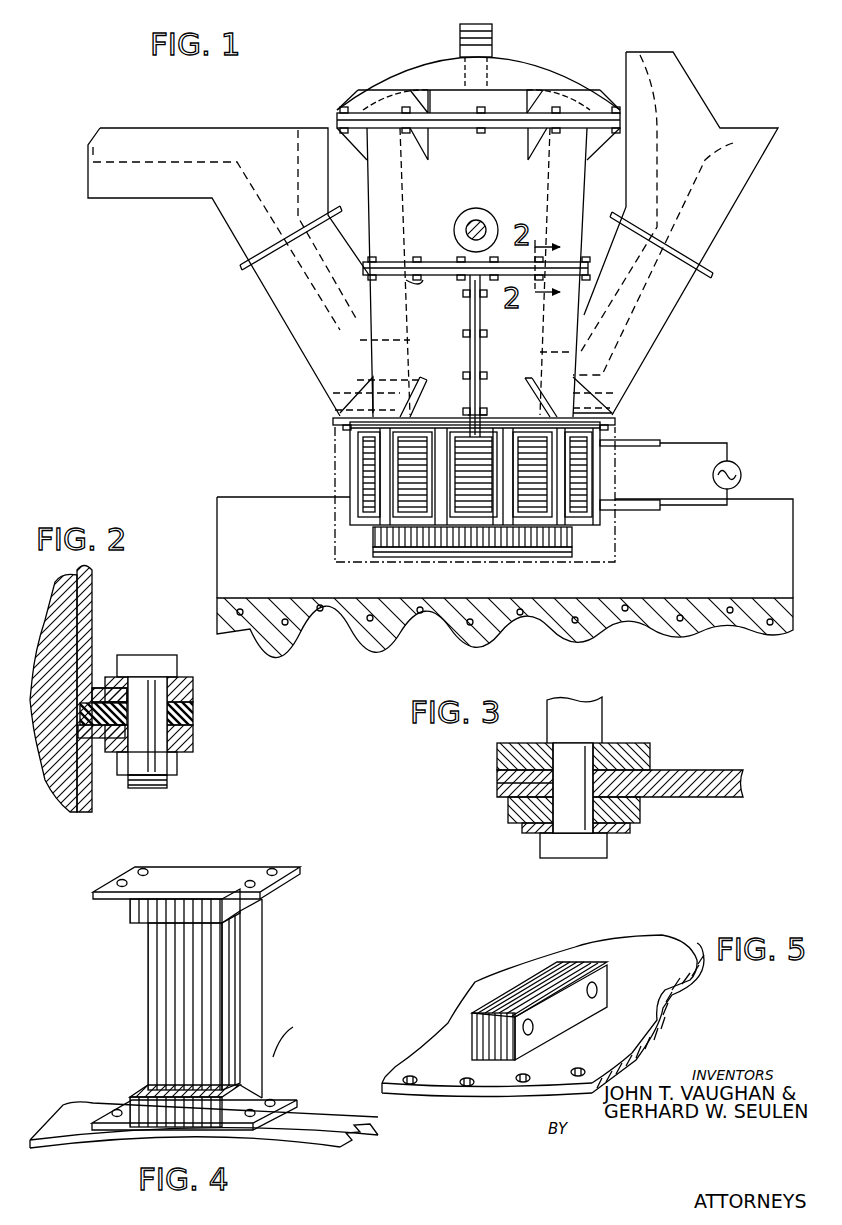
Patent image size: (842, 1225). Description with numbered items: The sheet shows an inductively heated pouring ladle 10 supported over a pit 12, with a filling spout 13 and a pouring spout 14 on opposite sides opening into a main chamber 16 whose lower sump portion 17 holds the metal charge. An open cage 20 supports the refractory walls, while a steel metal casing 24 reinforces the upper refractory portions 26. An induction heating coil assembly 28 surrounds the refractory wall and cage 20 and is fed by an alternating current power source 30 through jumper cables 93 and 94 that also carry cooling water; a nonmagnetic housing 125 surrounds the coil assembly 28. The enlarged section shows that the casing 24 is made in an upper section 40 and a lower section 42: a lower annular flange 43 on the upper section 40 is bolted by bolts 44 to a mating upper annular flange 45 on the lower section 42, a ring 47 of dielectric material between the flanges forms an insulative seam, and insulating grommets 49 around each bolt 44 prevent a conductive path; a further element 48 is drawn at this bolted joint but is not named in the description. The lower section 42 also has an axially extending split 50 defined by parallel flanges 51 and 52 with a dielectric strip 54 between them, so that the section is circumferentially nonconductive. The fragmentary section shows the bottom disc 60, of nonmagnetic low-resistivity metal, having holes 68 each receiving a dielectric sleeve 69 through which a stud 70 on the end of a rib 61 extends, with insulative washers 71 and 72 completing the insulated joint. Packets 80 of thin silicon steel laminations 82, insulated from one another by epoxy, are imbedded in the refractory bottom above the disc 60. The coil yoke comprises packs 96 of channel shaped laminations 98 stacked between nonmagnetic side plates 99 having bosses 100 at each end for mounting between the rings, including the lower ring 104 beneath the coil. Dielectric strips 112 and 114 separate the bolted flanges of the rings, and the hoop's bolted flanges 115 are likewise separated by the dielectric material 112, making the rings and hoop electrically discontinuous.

In FIG. 1, the pouring ladle 10 is at (573, 40).
In FIG. 1, the pit 12 is at (241, 515).
In FIG. 1, the filling spout 13 is at (752, 193).
In FIG. 1, the pouring spout 14 is at (162, 203).
In FIG. 1, the main chamber 16 is at (417, 307).
In FIG. 1, the lower sump portion 17 is at (362, 395).
In FIG. 1, the cage 20 is at (578, 554).
In FIG. 1, the metal casing 24 is at (592, 193).
In FIG. 1, the upper refractory portions 26 is at (587, 173).
In FIG. 2, the upper refractory portions 26 is at (72, 612).
In FIG. 1, the induction heating coil assembly 28 is at (604, 528).
In FIG. 1, the alternating current power source 30 is at (743, 467).
In FIG. 2, the upper section 40 is at (93, 581).
In FIG. 1, the lower section 42 is at (563, 333).
In FIG. 2, the lower section 42 is at (93, 790).
In FIG. 1, the lower annular flange 43 is at (446, 240).
In FIG. 2, the lower annular flange 43 is at (96, 688).
In FIG. 2, the bolts 44 is at (178, 660).
In FIG. 1, the upper annular flange 45 is at (422, 279).
In FIG. 2, the upper annular flange 45 is at (178, 740).
In FIG. 2, the ring 47 is at (194, 713).
In FIG. 1, the resilient mounting member 48 is at (388, 257).
In FIG. 2, the resilient mounting member 48 is at (199, 723).
In FIG. 2, the insulating grommets 49 is at (194, 686).
In FIG. 1, the axially extending split 50 is at (482, 358).
In FIG. 1, the flange 51 is at (482, 311).
In FIG. 1, the flange 52 is at (464, 305).
In FIG. 1, the strip 54 is at (476, 347).
In FIG. 3, the bottom disc 60 is at (731, 798).
In FIG. 5, the bottom disc 60 is at (658, 982).
In FIG. 3, the rib 61 is at (590, 717).
In FIG. 3, the holes 68 is at (634, 799).
In FIG. 5, the holes 68 is at (472, 1087).
In FIG. 3, the sleeve 69 is at (603, 775).
In FIG. 3, the stud 70 is at (565, 782).
In FIG. 3, the insulative washer 71 is at (650, 753).
In FIG. 3, the insulative washer 72 is at (640, 822).
In FIG. 5, the packets 80 is at (568, 1018).
In FIG. 5, the laminations 82 is at (535, 978).
In FIG. 1, the jumper cable 93 is at (646, 440).
In FIG. 1, the jumper cable 94 is at (638, 500).
In FIG. 4, the packs 96 is at (235, 862).
In FIG. 4, the laminations 98 is at (240, 967).
In FIG. 4, the side plates 99 is at (254, 937).
In FIG. 4, the bosses 100 is at (288, 866).
In FIG. 4, the lower ring 104 is at (87, 1106).
In FIG. 1, the dielectric strip 112 is at (490, 424).
In FIG. 1, the dielectric strip 114 is at (478, 522).
In FIG. 1, the bolted flanges 115 is at (477, 407).
In FIG. 1, the nonmagnetic housing 125 is at (335, 449).